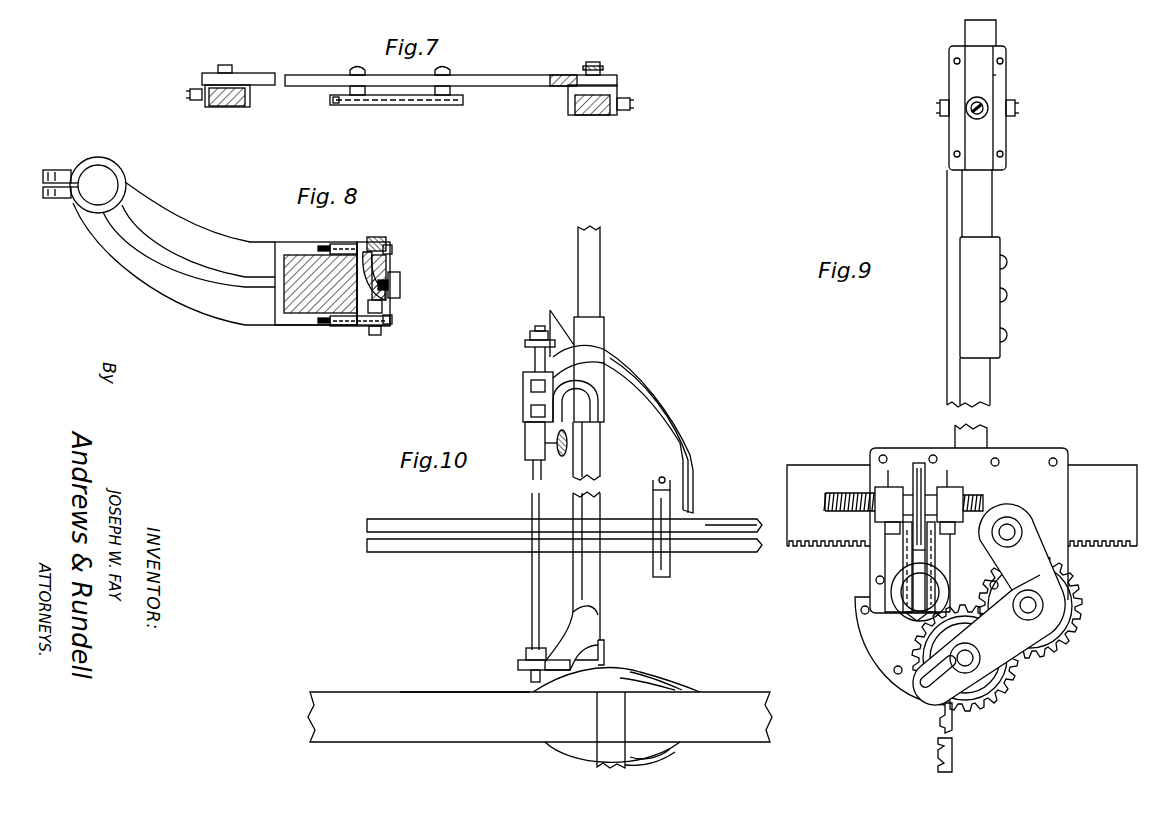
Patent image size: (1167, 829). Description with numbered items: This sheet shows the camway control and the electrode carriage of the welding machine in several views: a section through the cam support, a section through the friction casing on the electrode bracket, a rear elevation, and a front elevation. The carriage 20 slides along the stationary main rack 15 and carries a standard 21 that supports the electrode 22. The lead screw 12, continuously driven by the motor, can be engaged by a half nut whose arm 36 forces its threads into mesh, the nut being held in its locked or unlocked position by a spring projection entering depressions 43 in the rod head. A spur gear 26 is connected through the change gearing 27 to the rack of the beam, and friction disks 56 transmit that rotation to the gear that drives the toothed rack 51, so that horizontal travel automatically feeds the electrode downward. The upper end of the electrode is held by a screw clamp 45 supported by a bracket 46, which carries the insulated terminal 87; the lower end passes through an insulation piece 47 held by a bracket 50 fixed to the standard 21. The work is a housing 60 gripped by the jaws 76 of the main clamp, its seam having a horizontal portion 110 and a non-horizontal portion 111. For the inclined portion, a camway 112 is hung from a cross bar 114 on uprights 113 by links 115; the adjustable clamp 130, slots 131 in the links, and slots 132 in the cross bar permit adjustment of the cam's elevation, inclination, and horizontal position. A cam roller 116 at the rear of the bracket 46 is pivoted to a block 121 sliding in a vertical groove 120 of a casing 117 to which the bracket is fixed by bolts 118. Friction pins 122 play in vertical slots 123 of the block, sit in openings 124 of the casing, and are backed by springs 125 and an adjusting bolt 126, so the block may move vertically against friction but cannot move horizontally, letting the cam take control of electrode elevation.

In FIG. 9, the lead screw 12 is at (836, 490).
In FIG. 9, the main rack 15 is at (807, 470).
In FIG. 9, the carriage 20 is at (1024, 463).
In FIG. 8, the standard 21 is at (306, 326).
In FIG. 10, the electrode 22 is at (533, 584).
In FIG. 9, the spur gear 26 is at (915, 615).
In FIG. 9, the change gearing 27 is at (990, 372).
In FIG. 10, the change gearing 27 is at (600, 276).
In FIG. 9, the arm 36 is at (920, 556).
In FIG. 9, the depressions 43 is at (937, 582).
In FIG. 10, the screw clamp 45 is at (533, 434).
In FIG. 8, the bracket 46 is at (268, 329).
In FIG. 10, the bracket 46 is at (582, 368).
In FIG. 10, the insulation piece 47 is at (522, 657).
In FIG. 10, the bracket 50 is at (585, 640).
In FIG. 8, the toothed rack 51 is at (340, 246).
In FIG. 9, the toothed rack 51 is at (948, 212).
In FIG. 10, the toothed rack 51 is at (585, 510).
In FIG. 9, the friction disks 56 is at (990, 312).
In FIG. 10, the housing 60 is at (458, 700).
In FIG. 10, the jaws 76 is at (631, 722).
In FIG. 10, the terminal 87 is at (528, 341).
In FIG. 10, the horizontal portion 110 is at (394, 693).
In FIG. 10, the non-horizontal portion 111 is at (650, 684).
In FIG. 7, the camway 112 is at (421, 101).
In FIG. 10, the camway 112 is at (651, 406).
In FIG. 7, the uprights 113 is at (593, 108).
In FIG. 7, the cross bar 114 is at (503, 82).
In FIG. 10, the cross bar 114 is at (492, 544).
In FIG. 7, the links 115 is at (360, 92).
In FIG. 8, the cam roller 116 is at (401, 284).
In FIG. 9, the cam roller 116 is at (985, 114).
In FIG. 8, the casing 117 is at (391, 311).
In FIG. 9, the casing 117 is at (1002, 140).
In FIG. 8, the bolts 118 is at (393, 250).
In FIG. 9, the bolts 118 is at (1003, 62).
In FIG. 8, the groove 120 is at (342, 302).
In FIG. 9, the groove 120 is at (993, 75).
In FIG. 8, the block 121 is at (370, 303).
In FIG. 8, the friction pins 122 is at (390, 262).
In FIG. 8, the vertical slots 123 is at (384, 274).
In FIG. 8, the openings 124 is at (360, 248).
In FIG. 8, the springs 125 is at (378, 253).
In FIG. 8, the adjusting bolt 126 is at (365, 250).
In FIG. 9, the adjusting bolt 126 is at (940, 108).
In FIG. 7, the adjustable clamp 130 is at (570, 100).
In FIG. 10, the slots 131 is at (668, 569).
In FIG. 10, the slots 132 is at (723, 540).